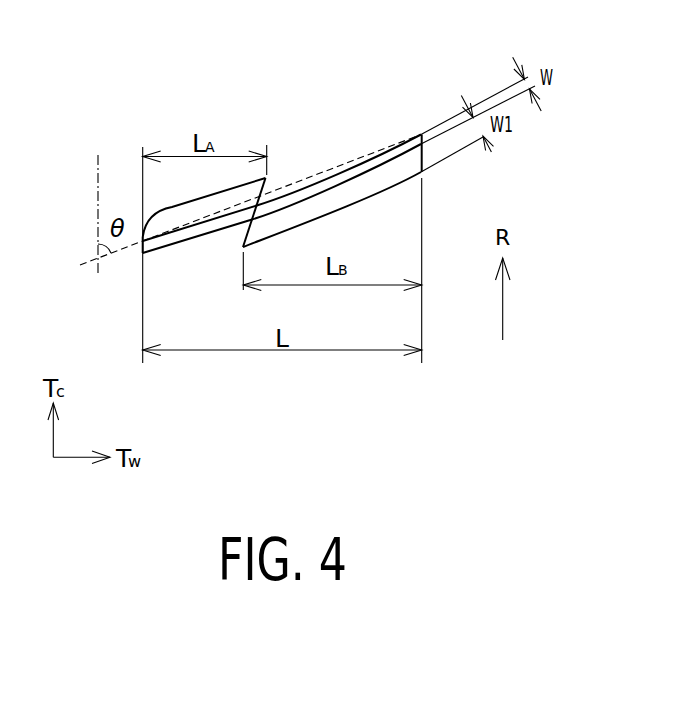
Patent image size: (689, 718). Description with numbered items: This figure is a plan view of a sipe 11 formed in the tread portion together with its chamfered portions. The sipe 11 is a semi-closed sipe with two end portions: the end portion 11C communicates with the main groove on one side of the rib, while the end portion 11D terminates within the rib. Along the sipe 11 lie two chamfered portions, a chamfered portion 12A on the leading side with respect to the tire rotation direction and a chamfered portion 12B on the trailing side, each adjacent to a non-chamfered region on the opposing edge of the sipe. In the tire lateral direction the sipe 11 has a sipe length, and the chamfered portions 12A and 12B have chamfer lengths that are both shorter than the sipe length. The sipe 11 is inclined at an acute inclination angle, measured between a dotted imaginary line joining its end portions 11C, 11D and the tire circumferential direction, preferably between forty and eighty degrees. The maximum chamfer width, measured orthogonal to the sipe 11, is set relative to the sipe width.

The sipe 11 is at (302, 180).
The end portion 11C is at (420, 132).
The end portion 11D is at (150, 247).
The chamfered portion 12A is at (208, 206).
The chamfered portion 12B is at (360, 188).